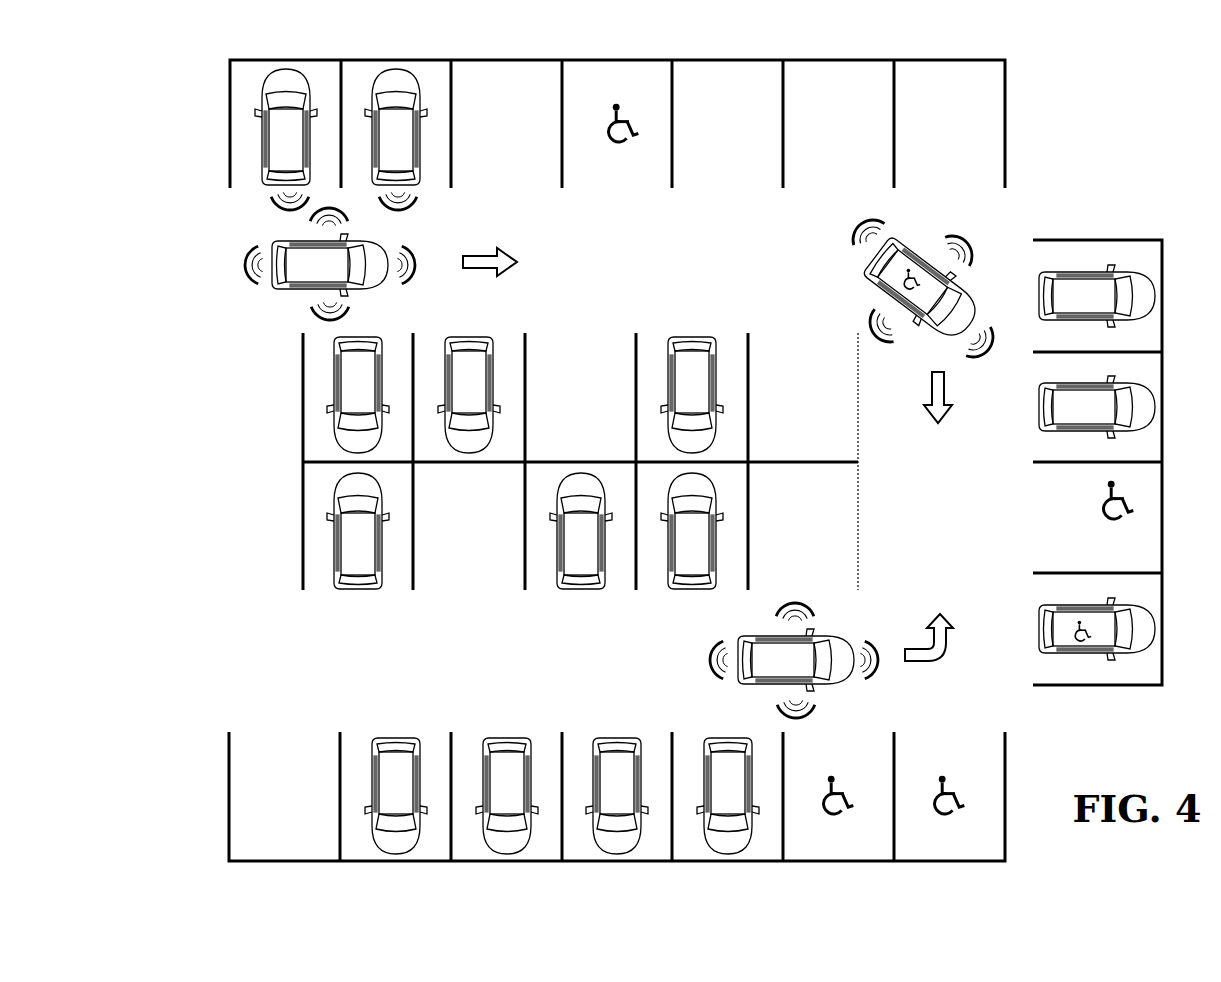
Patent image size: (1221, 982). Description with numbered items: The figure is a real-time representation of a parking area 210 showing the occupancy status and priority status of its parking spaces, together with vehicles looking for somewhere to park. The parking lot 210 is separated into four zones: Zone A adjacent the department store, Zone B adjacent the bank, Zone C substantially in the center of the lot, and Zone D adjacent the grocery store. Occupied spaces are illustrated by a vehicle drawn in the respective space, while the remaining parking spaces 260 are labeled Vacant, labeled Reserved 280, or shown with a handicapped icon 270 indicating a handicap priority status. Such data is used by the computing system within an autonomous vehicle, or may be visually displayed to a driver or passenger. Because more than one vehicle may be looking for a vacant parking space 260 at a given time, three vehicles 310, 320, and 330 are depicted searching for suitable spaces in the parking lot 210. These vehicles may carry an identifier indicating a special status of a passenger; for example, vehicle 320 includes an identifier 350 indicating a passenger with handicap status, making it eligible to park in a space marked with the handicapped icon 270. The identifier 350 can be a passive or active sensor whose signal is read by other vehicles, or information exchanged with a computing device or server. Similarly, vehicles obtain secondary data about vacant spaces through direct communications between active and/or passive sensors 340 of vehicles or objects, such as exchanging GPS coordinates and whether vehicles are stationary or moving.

The parking area 210 is at (1052, 100).
The parking spaces 260 is at (617, 468).
The handicapped icon 270 is at (858, 462).
The reserved parking space 280 is at (802, 394).
The vehicle 310 is at (230, 262).
The vehicle 320 is at (848, 277).
The vehicle 330 is at (695, 660).
The sensors 340 is at (402, 210).
The identifier 350 is at (915, 268).